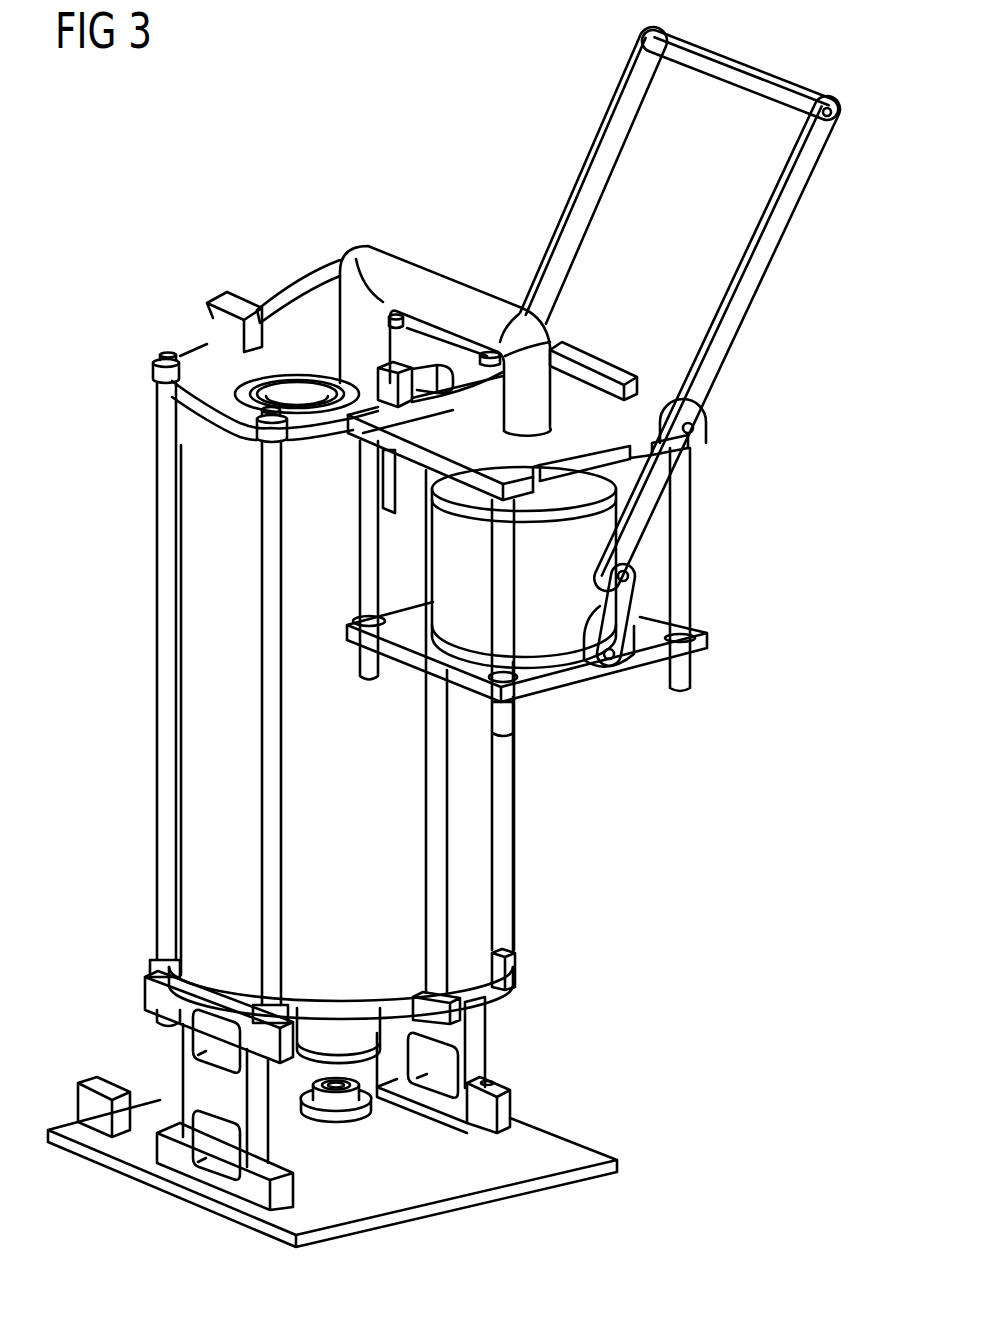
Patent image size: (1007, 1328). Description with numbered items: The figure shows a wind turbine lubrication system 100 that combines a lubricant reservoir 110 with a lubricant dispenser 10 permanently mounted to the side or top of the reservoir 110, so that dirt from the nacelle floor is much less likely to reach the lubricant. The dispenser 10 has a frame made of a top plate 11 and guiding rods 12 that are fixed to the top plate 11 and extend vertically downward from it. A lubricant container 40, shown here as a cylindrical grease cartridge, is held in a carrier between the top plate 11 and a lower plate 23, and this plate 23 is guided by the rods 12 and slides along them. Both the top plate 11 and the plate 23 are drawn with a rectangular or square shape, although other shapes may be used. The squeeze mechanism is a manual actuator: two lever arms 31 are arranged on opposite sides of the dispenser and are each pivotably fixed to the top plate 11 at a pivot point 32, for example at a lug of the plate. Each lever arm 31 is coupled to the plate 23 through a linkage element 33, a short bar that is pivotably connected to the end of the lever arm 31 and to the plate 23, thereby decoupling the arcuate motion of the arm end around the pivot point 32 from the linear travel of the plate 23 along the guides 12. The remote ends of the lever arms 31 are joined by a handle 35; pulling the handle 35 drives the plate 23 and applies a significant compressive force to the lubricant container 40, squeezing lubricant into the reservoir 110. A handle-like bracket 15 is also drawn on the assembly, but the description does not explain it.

The wind turbine lubrication system 100 is at (722, 1178).
The lubricant reservoir 110 is at (190, 619).
The lubricant dispenser 10 is at (596, 501).
The top plate 11 is at (638, 408).
The guiding rods 12 is at (690, 538).
The handle 15 is at (463, 297).
The plate 23 is at (572, 667).
The lever arm 31 is at (607, 146).
The pivot point 32 is at (706, 428).
The linkage element 33 is at (612, 617).
The handle 35 is at (756, 80).
The lubricant container 40 is at (543, 637).